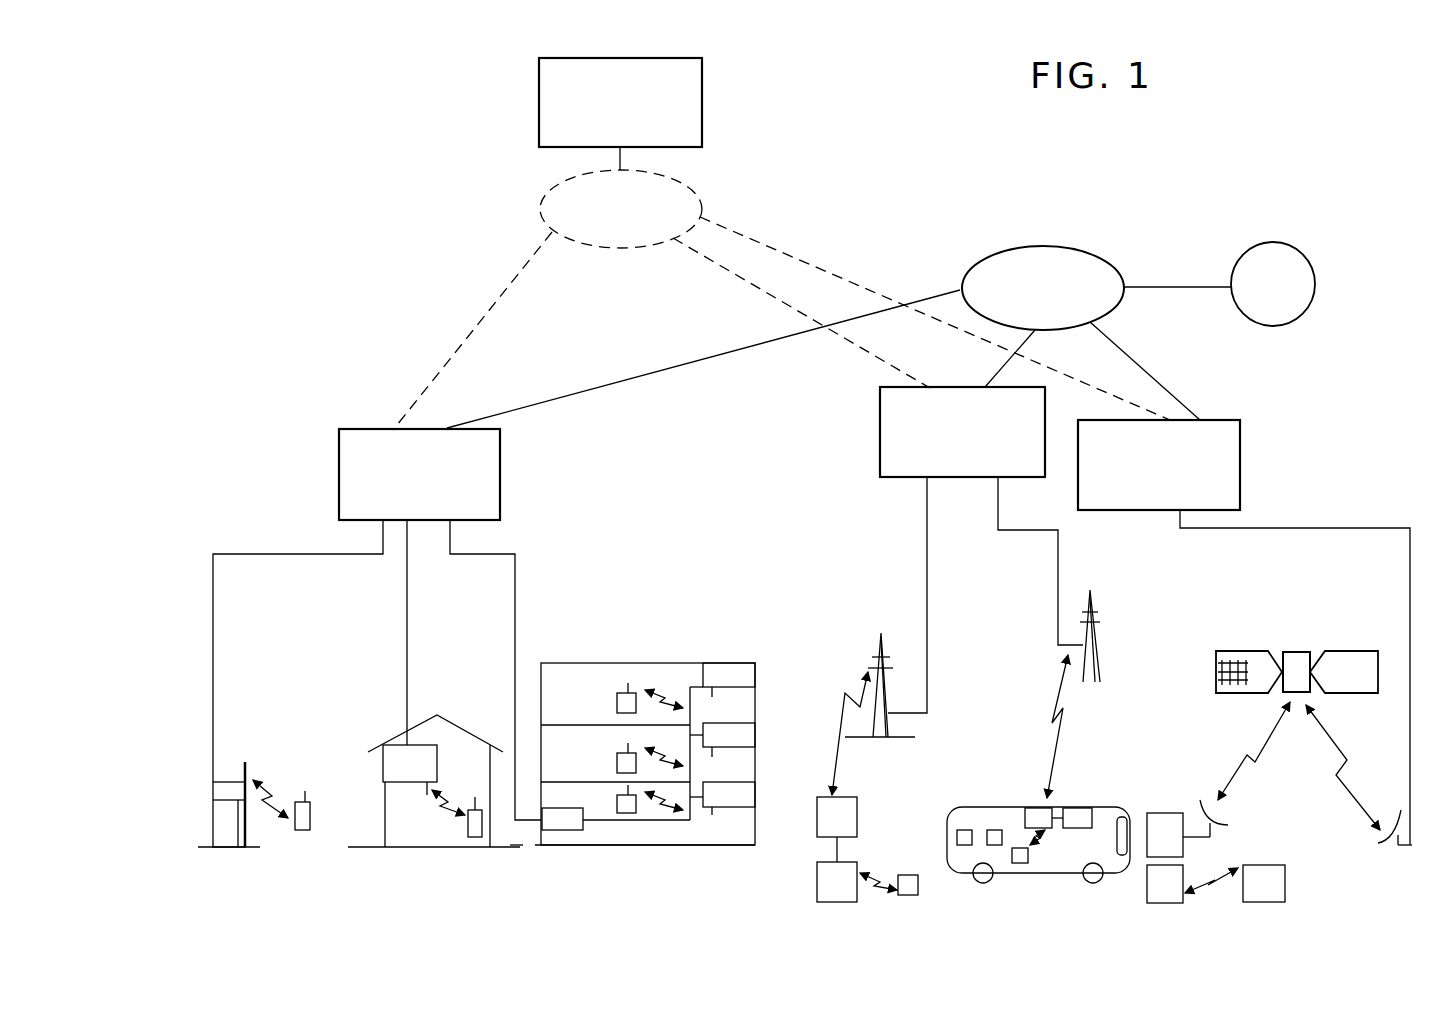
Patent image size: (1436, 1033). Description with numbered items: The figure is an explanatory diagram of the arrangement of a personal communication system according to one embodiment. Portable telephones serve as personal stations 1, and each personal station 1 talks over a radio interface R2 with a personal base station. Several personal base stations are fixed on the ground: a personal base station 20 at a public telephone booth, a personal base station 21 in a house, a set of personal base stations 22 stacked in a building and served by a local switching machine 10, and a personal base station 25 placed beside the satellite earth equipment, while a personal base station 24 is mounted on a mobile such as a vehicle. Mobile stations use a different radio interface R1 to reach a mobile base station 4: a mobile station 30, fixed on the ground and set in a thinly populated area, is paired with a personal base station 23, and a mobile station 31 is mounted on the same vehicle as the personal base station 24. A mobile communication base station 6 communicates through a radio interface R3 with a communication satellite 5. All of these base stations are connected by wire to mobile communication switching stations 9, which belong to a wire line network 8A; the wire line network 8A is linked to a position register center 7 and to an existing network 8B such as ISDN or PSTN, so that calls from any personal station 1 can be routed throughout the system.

The personal station 1 is at (312, 820).
The mobile base station 4 is at (872, 657).
The communication satellite 5 is at (1303, 652).
The mobile communication base station 6 is at (1166, 813).
The position register center 7 is at (703, 72).
The wire line network 8A is at (700, 193).
The existing network 8B is at (1316, 286).
The mobile communication switching station 9 is at (500, 448).
The local switching machine 10 is at (565, 830).
The personal base station 20 is at (230, 787).
The personal base station 21 is at (383, 770).
The personal base station 22 is at (725, 663).
The personal base station 23 is at (817, 878).
The personal base station mounted on a mobile 24 is at (1033, 808).
The personal base station 25 is at (1147, 892).
The mobile station 30 is at (858, 812).
The mobile station mounted on a mobile 31 is at (1078, 808).
The radio interface R1 is at (950, 726).
The radio interface R2 is at (661, 688).
The radio interface R3 is at (1299, 766).